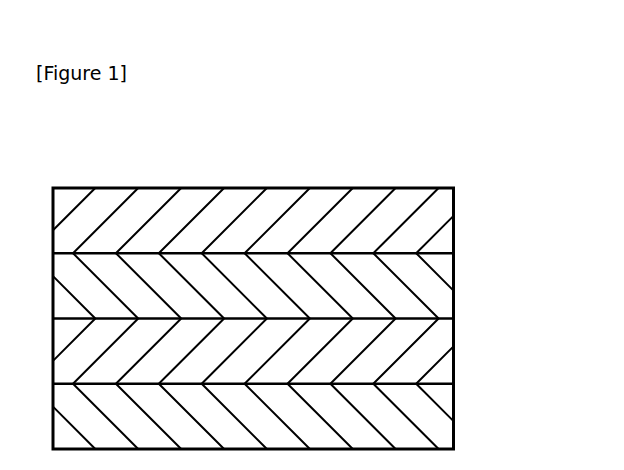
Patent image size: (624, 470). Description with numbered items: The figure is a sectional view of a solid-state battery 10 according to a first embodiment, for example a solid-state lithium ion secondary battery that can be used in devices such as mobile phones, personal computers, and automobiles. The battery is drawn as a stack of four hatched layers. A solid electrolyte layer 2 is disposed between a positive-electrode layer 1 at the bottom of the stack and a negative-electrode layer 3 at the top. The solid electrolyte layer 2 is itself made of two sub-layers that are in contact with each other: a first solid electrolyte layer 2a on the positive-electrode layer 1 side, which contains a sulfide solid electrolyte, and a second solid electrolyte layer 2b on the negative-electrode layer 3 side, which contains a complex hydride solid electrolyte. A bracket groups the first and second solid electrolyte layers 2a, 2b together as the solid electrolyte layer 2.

The solid-state battery 10 is at (391, 170).
The negative-electrode layer 3 is at (448, 235).
The solid electrolyte layer 2 is at (548, 297).
The second solid electrolyte layer 2b is at (445, 303).
The first solid electrolyte layer 2a is at (445, 365).
The positive-electrode layer 1 is at (445, 433).